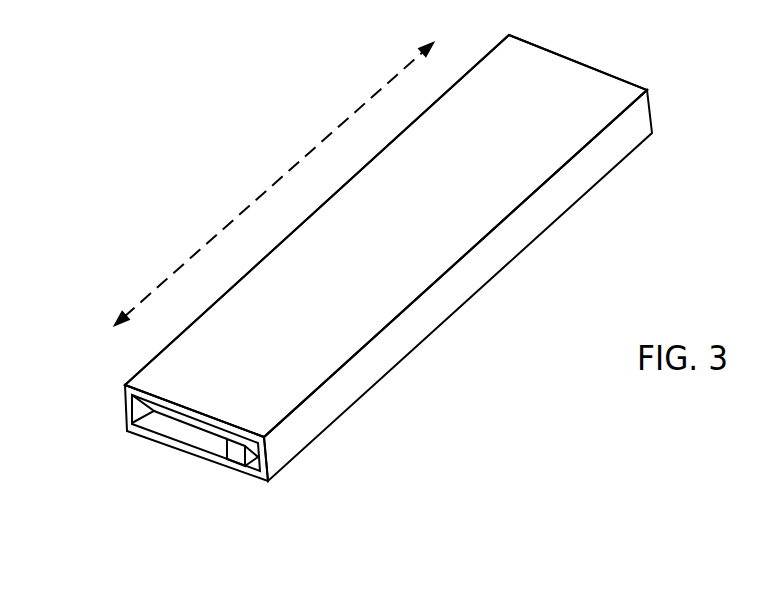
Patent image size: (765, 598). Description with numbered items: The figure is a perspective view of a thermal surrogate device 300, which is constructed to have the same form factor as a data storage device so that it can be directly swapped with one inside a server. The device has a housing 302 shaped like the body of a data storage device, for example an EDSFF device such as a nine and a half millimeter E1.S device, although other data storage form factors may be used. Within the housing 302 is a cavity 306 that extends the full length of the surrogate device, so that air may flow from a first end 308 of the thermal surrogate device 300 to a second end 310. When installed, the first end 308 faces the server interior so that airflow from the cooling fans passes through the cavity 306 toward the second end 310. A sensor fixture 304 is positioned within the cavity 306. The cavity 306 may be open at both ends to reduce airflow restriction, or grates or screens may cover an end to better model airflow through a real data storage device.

The thermal surrogate device 300 is at (341, 296).
The housing 302 is at (563, 216).
The sensor fixture 304 is at (132, 430).
The cavity 306 is at (240, 462).
The first end 308 is at (592, 67).
The second end 310 is at (125, 386).